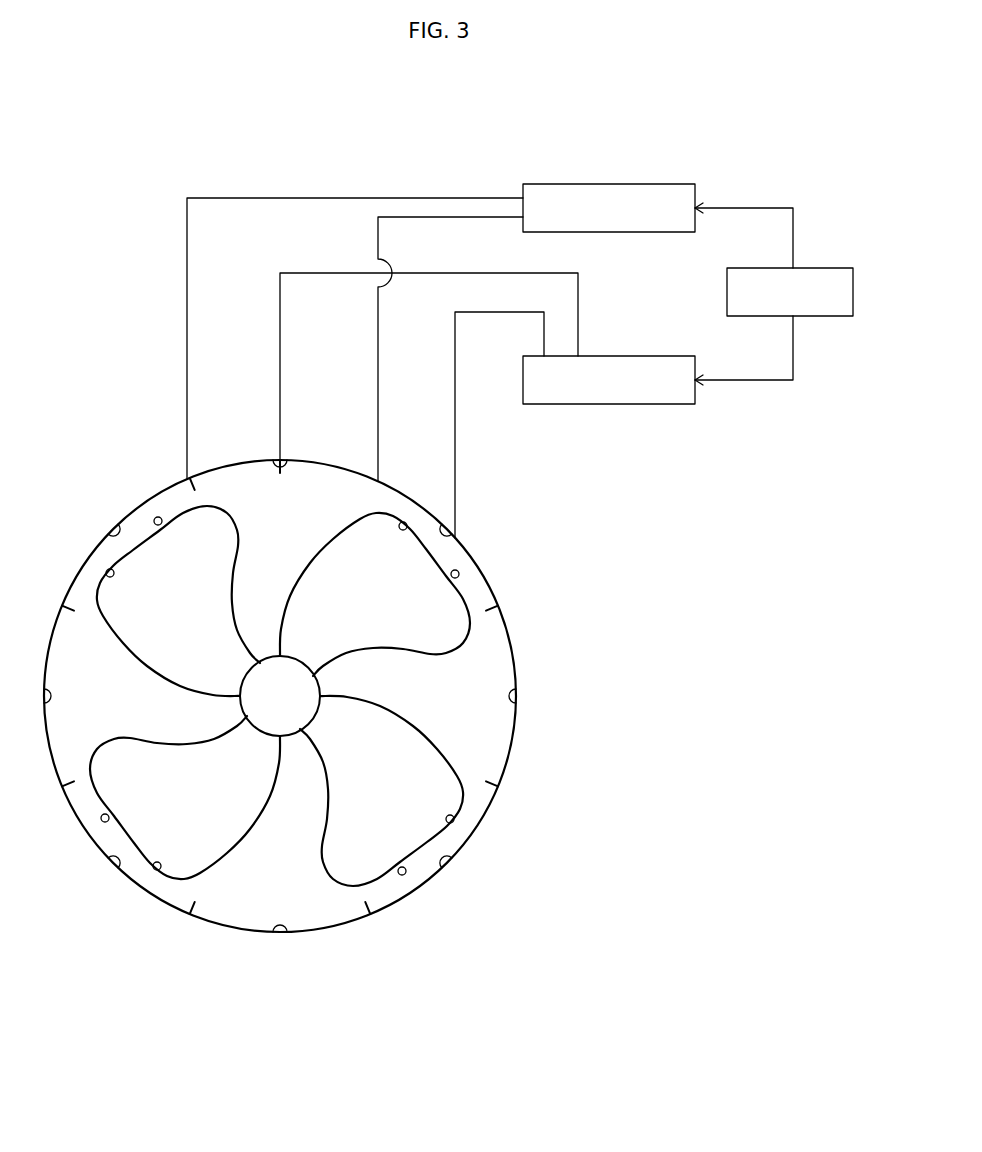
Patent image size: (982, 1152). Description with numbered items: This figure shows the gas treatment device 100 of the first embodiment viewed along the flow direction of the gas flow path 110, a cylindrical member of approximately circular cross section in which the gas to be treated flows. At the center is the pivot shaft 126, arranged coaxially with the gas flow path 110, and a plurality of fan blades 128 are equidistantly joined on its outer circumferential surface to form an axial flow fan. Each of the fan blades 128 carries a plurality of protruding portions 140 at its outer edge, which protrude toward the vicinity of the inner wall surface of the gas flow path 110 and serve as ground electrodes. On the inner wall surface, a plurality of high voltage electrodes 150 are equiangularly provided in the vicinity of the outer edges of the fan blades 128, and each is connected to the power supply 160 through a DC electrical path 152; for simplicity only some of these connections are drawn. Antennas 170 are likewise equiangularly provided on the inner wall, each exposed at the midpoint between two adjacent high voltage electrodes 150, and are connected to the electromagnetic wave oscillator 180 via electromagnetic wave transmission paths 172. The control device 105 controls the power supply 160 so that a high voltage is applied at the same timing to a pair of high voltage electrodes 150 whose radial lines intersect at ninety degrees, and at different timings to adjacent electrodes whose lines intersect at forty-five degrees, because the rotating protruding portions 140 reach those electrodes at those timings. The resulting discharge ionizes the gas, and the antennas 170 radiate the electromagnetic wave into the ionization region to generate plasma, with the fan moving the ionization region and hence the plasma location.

The gas treatment device 100 is at (598, 157).
The control device 105 is at (830, 268).
The gas flow path 110 is at (258, 907).
The pivot shaft 126 is at (282, 720).
The fan blades 128 is at (415, 778).
The protruding portions (ground electrodes) 140 is at (407, 522).
The high voltage electrodes 150 is at (292, 465).
The DC electrical paths 152 is at (582, 316).
The power supply 160 is at (657, 405).
The antenna 170 is at (372, 491).
The electromagnetic wave transmission paths 172 is at (463, 197).
The electromagnetic wave oscillator 180 is at (665, 232).